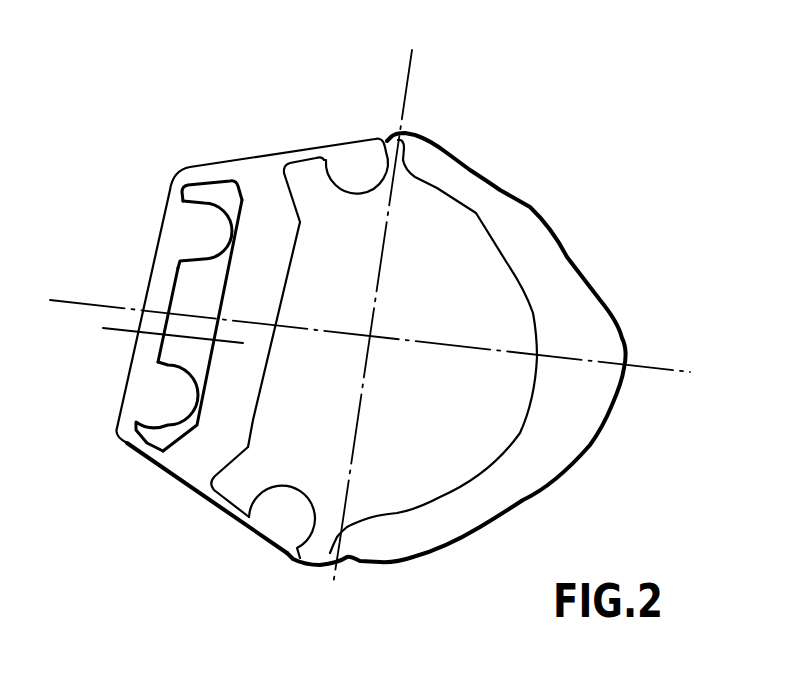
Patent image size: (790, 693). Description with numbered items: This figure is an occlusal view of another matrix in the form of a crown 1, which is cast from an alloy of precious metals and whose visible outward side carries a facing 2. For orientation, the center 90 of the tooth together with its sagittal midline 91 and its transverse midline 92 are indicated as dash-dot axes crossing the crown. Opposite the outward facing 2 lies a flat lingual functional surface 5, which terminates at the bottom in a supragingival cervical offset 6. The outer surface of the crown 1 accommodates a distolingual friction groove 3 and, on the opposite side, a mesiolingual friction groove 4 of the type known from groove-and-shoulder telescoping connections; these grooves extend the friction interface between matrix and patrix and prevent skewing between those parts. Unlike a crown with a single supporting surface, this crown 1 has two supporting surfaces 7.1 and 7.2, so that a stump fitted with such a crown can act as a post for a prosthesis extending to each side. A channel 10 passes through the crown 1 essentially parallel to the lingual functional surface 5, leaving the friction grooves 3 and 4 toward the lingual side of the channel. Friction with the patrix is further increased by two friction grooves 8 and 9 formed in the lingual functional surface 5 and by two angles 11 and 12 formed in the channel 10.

The crown 1 is at (445, 228).
The facing 2 is at (529, 252).
The distolingual friction groove 3 is at (287, 517).
The mesiolingual friction groove 4 is at (360, 167).
The lingual functional surface 5 is at (170, 295).
The supragingival cervical offset 6 is at (150, 348).
The supporting surface 7.1 is at (217, 505).
The supporting surface 7.2 is at (213, 180).
The friction groove 8 is at (163, 395).
The friction groove 9 is at (200, 230).
The channel 10 is at (158, 331).
The angle 11 is at (250, 448).
The angle 12 is at (303, 222).
The center of the tooth 90 is at (369, 336).
The sagittal midline 91 is at (333, 560).
The transverse midline 92 is at (665, 372).